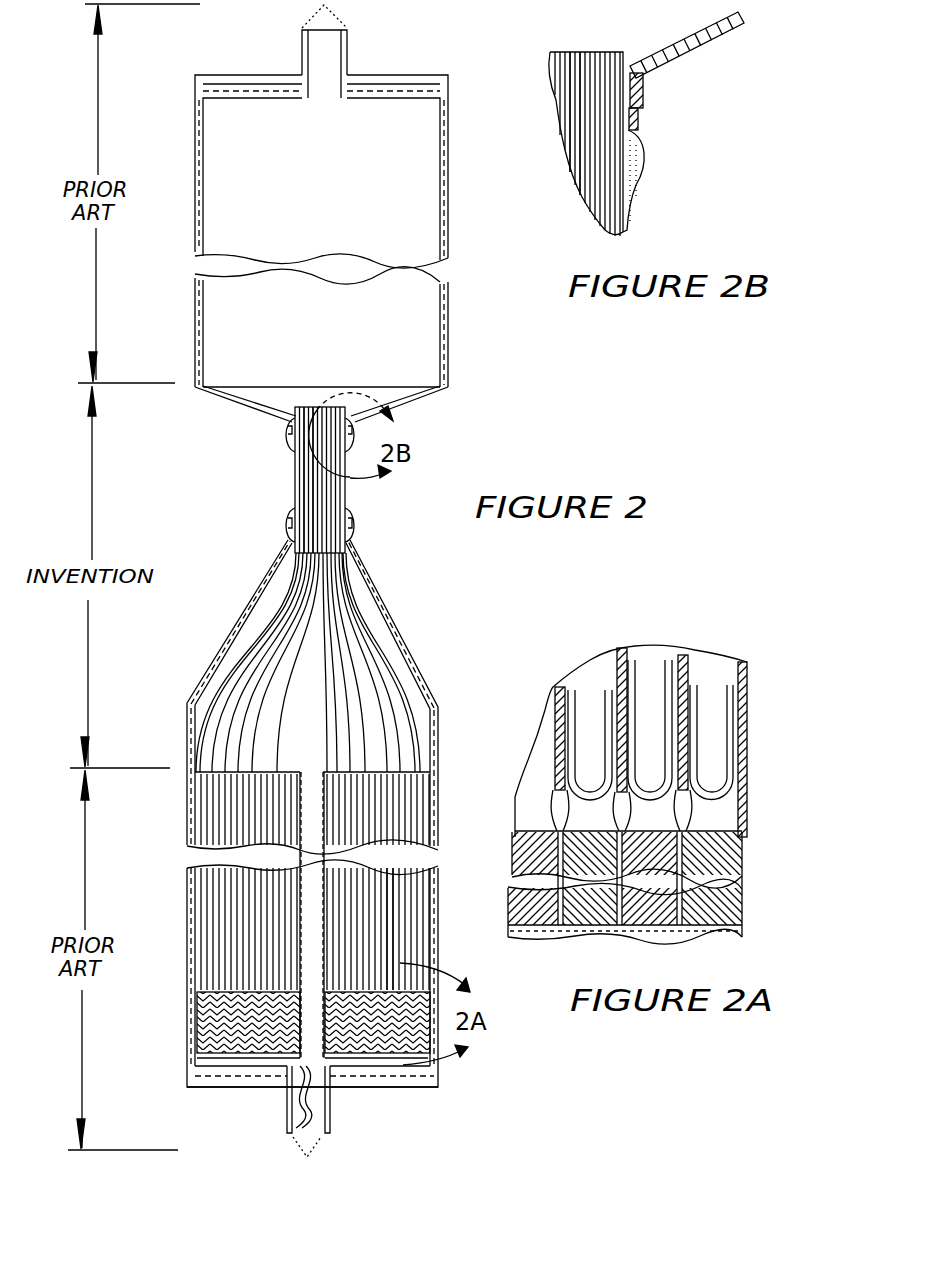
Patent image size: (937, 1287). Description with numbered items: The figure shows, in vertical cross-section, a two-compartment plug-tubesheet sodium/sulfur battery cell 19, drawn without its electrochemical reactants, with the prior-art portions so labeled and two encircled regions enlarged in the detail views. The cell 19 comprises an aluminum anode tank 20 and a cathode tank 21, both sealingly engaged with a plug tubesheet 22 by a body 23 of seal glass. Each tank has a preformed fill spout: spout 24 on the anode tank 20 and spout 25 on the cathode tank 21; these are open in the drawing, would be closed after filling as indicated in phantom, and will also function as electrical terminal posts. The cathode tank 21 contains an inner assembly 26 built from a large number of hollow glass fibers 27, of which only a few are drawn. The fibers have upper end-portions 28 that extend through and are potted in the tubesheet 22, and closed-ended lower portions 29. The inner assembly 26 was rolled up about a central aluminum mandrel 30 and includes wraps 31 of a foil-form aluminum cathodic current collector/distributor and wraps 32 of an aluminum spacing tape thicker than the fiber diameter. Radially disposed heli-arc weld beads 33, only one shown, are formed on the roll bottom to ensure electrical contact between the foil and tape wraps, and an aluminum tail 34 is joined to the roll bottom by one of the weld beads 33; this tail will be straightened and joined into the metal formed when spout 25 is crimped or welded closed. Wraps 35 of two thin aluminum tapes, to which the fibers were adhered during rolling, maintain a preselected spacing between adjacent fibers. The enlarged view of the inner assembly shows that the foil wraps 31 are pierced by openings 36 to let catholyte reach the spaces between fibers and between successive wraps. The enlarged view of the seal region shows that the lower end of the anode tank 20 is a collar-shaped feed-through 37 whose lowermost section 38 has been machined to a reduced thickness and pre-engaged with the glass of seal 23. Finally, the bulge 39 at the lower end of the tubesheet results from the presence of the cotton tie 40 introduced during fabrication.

In FIG. 2, the cell 19 is at (478, 336).
In FIG. 2, the anode tank 20 is at (448, 156).
In FIG. 2B, the anode tank 20 is at (707, 38).
In FIG. 2, the cathode tank 21 is at (432, 688).
In FIG. 2, the plug tubesheet 22 is at (305, 494).
In FIG. 2B, the plug tubesheet 22 is at (590, 93).
In FIG. 2, the body of seal glass 23 is at (292, 446).
In FIG. 2B, the body of seal glass 23 is at (634, 182).
In FIG. 2, the fill spout 24 is at (349, 43).
In FIG. 2, the fill spout 25 is at (330, 1123).
In FIG. 2, the inner assembly 26 is at (404, 640).
In FIG. 2, the hollow glass fibers 27 is at (417, 733).
In FIG. 2, the upper end-portion 28 is at (305, 470).
In FIG. 2B, the upper end-portion 28 is at (603, 172).
In FIG. 2, the lower portions 29 is at (387, 950).
In FIG. 2A, the lower portions 29 is at (727, 720).
In FIG. 2, the central mandrel 30 is at (327, 823).
In FIG. 2, the wraps of foil-form cathodic current collector/distributor 31 is at (390, 893).
In FIG. 2A, the wraps of foil-form cathodic current collector/distributor 31 is at (743, 853).
In FIG. 2, the wraps of aluminum spacing tape 32 is at (202, 1022).
In FIG. 2A, the wraps of aluminum spacing tape 32 is at (718, 857).
In FIG. 2, the heli-arc weld beads 33 is at (383, 1074).
In FIG. 2A, the heli-arc weld beads 33 is at (720, 940).
In FIG. 2, the aluminum tail 34 is at (300, 1116).
In FIG. 2, the wraps of thin aluminum tapes 35 is at (425, 790).
In FIG. 2A, the wraps of thin aluminum tapes 35 is at (637, 647).
In FIG. 2A, the openings 36 is at (677, 806).
In FIG. 2B, the feed-through 37 is at (664, 108).
In FIG. 2B, the lowermost section 38 is at (640, 124).
In FIG. 2, the bulge 39 is at (350, 540).
In FIG. 2, the cotton tie 40 is at (290, 540).